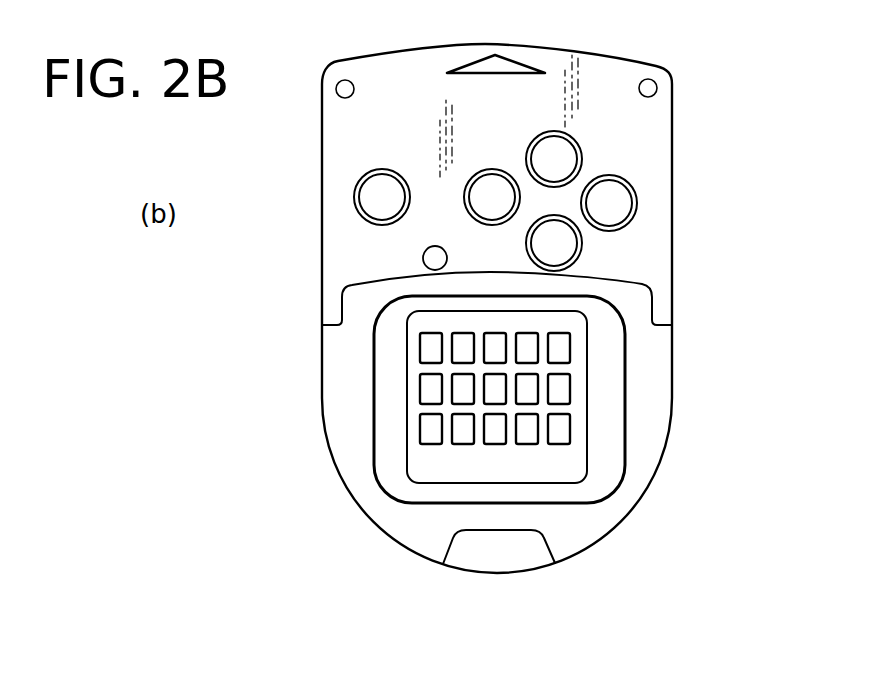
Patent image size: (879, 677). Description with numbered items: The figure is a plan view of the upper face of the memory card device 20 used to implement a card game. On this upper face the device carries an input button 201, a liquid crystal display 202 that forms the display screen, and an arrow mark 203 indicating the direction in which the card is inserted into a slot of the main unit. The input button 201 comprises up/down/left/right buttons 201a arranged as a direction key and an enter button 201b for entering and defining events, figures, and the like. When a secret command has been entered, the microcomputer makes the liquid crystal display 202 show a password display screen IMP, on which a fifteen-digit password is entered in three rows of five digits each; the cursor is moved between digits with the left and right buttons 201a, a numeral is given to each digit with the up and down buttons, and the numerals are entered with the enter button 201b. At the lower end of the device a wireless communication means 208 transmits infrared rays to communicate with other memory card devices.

The memory card device 20 is at (302, 368).
The input button 201 is at (489, 205).
The up/down/left/right buttons 201a is at (562, 202).
The enter button 201b is at (363, 218).
The liquid crystal display 202 is at (563, 417).
The arrow mark 203 is at (530, 63).
The wireless communication means 208 is at (480, 550).
The password display screen IMP is at (418, 458).